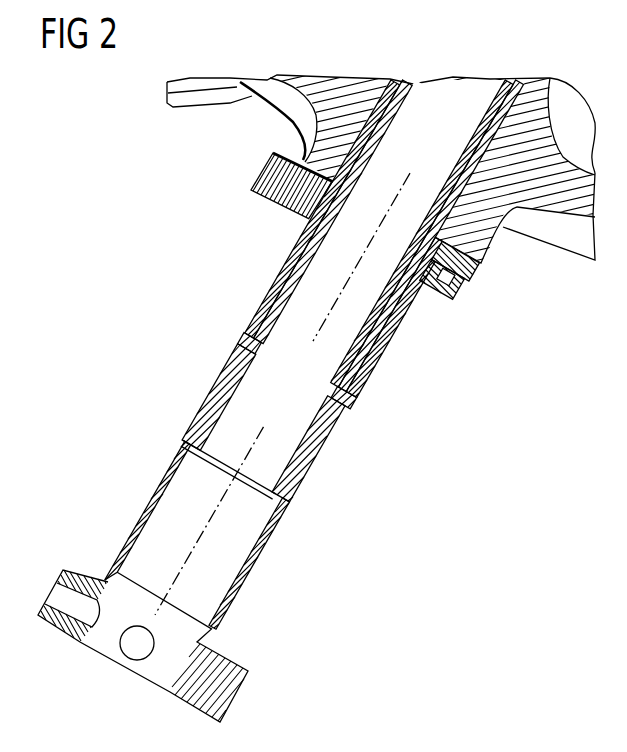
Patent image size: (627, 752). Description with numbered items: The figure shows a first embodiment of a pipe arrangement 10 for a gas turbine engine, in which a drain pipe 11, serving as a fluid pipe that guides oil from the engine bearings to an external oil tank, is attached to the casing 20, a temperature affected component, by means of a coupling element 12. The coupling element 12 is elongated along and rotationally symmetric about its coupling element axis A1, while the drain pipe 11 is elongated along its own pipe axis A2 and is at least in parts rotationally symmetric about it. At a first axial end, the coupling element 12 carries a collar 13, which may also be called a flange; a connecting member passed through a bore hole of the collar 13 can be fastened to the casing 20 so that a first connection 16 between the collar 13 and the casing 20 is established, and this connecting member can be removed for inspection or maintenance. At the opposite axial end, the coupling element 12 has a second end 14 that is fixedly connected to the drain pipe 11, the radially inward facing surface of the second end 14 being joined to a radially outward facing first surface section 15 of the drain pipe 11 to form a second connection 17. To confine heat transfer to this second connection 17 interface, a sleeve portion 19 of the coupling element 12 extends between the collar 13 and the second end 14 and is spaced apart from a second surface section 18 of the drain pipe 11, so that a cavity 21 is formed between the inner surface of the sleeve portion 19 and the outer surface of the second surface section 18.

The pipe arrangement 10 is at (150, 366).
The drain pipe 11 is at (246, 574).
The coupling element 12 is at (292, 251).
The collar 13 is at (255, 181).
The second end 14 is at (242, 342).
The first surface section 15 is at (258, 351).
The first connection 16 is at (487, 248).
The second connection 17 is at (336, 398).
The second surface section 18 is at (378, 312).
The sleeve portion 19 is at (390, 336).
The casing 20 is at (300, 145).
The cavity 21 is at (366, 368).
The coupling element axis A1 is at (412, 160).
The pipe axis A2 is at (212, 510).